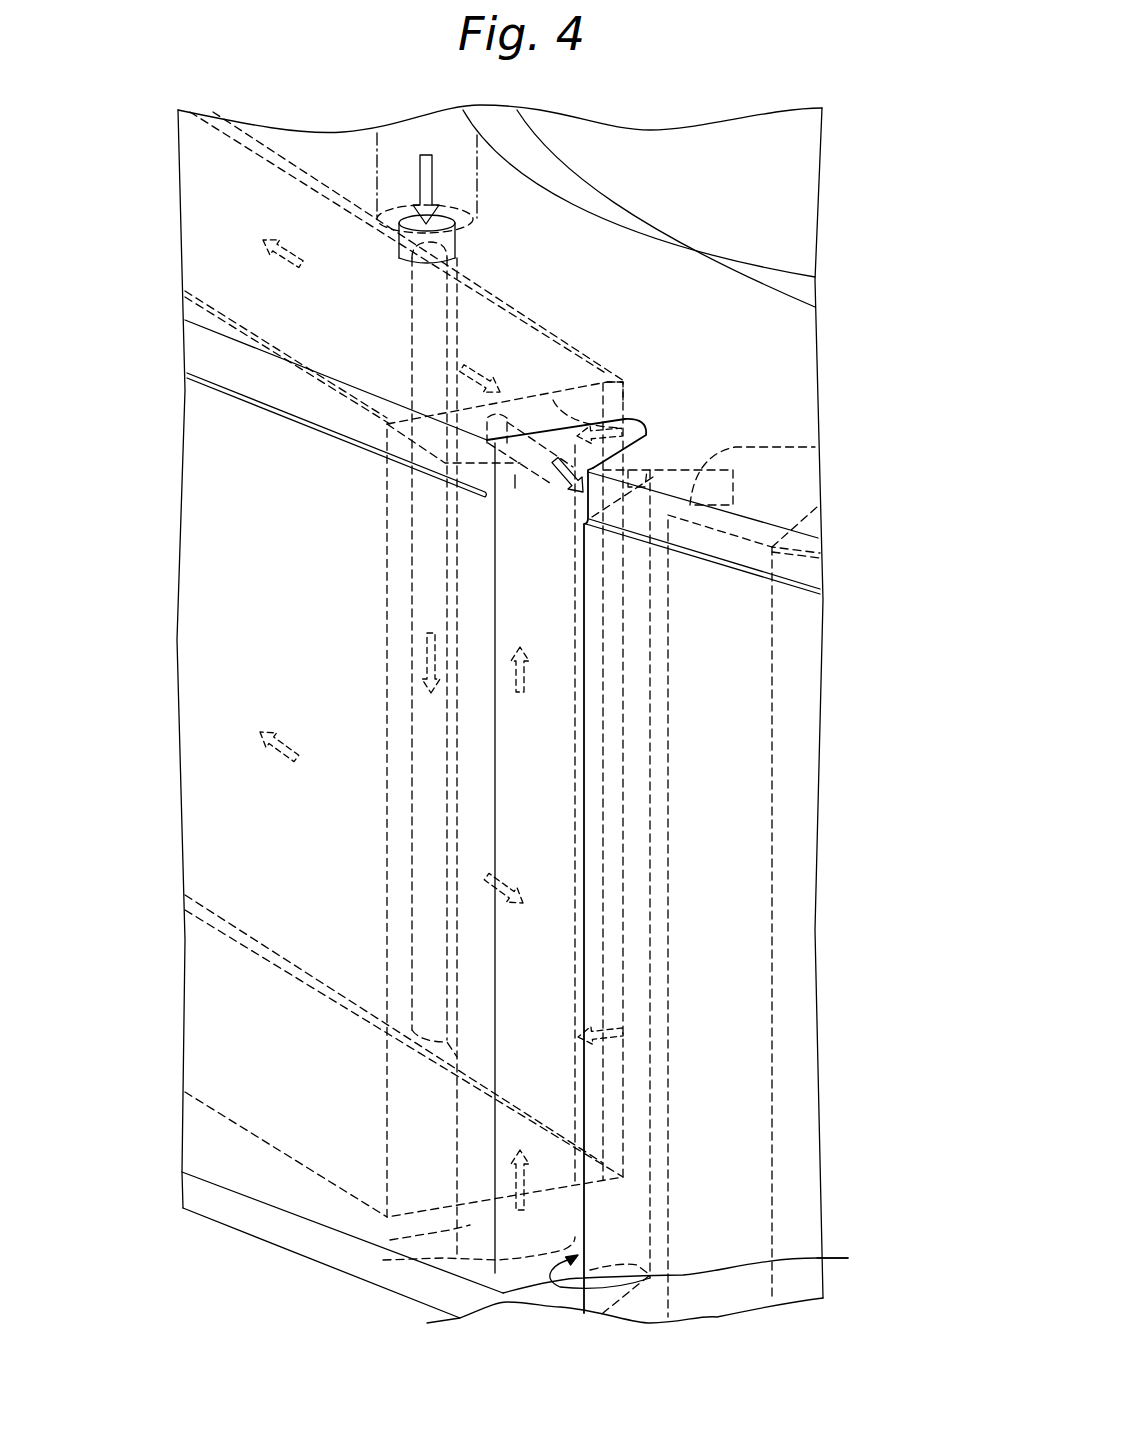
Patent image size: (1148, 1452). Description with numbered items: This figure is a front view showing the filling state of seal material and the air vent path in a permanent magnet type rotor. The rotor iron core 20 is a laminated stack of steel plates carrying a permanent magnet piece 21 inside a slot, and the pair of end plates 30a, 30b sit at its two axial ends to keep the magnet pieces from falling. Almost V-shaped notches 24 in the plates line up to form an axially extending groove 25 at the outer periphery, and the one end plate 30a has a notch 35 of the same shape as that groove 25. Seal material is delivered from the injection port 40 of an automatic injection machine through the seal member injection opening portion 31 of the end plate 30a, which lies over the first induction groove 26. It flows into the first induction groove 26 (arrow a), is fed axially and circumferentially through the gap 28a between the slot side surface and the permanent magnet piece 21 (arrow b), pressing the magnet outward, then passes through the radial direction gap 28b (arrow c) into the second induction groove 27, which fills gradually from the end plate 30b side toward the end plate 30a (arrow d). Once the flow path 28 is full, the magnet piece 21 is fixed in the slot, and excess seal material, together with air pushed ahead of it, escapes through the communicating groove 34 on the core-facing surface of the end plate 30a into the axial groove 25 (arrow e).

The rotor iron core 20 is at (225, 833).
The permanent magnet piece 21 is at (223, 248).
The notch 24 is at (877, 1259).
The groove 25 is at (720, 1268).
The first induction groove 26 is at (427, 333).
The second induction groove 27 is at (727, 772).
The flow path 28 is at (606, 376).
The gap 28a is at (557, 340).
The radial direction gap 28b is at (618, 404).
The end plate 30a is at (240, 368).
The end plate 30b is at (200, 1197).
The seal member injection opening portion 31 is at (405, 218).
The communicating groove 34 is at (560, 465).
The notch 35 is at (553, 475).
The injection port 40 is at (478, 182).
The arrow a is at (423, 640).
The arrow b is at (297, 256).
The arrow c is at (623, 1047).
The arrow d is at (523, 697).
The arrow e is at (557, 495).